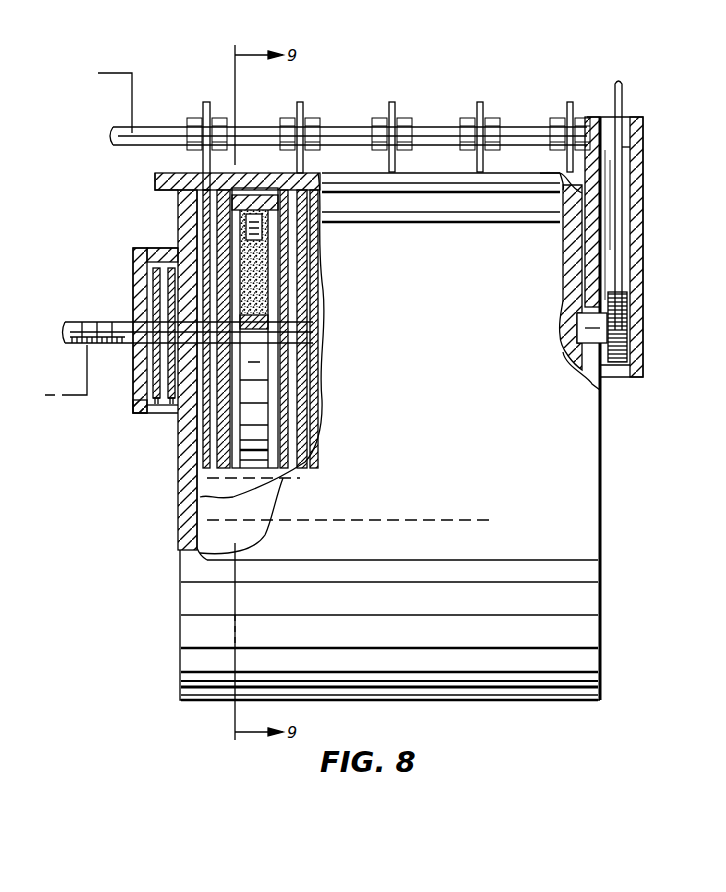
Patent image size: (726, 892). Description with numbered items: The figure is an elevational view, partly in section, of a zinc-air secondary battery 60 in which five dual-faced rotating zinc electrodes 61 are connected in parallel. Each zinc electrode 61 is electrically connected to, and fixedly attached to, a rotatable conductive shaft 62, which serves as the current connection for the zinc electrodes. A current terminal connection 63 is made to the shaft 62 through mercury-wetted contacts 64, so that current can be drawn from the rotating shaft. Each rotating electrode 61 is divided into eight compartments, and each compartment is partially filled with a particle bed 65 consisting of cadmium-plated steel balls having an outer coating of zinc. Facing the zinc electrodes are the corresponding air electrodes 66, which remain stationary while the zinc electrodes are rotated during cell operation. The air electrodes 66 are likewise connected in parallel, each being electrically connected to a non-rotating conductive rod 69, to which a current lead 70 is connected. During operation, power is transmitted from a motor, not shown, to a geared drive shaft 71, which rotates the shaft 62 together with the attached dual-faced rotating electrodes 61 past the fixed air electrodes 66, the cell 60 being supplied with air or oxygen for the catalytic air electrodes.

The zinc-air battery 60 is at (488, 82).
The dual-faced rotating zinc electrode 61 is at (228, 222).
The rotatable conductive shaft 62 is at (185, 364).
The current terminal connection 63 is at (98, 322).
The mercury-wetted contacts 64 is at (171, 402).
The particle bed 65 is at (240, 237).
The air electrode 66 is at (203, 497).
The non-rotating conductive rod 69 is at (348, 125).
The current lead 70 is at (130, 100).
The geared drive shaft 71 is at (624, 88).